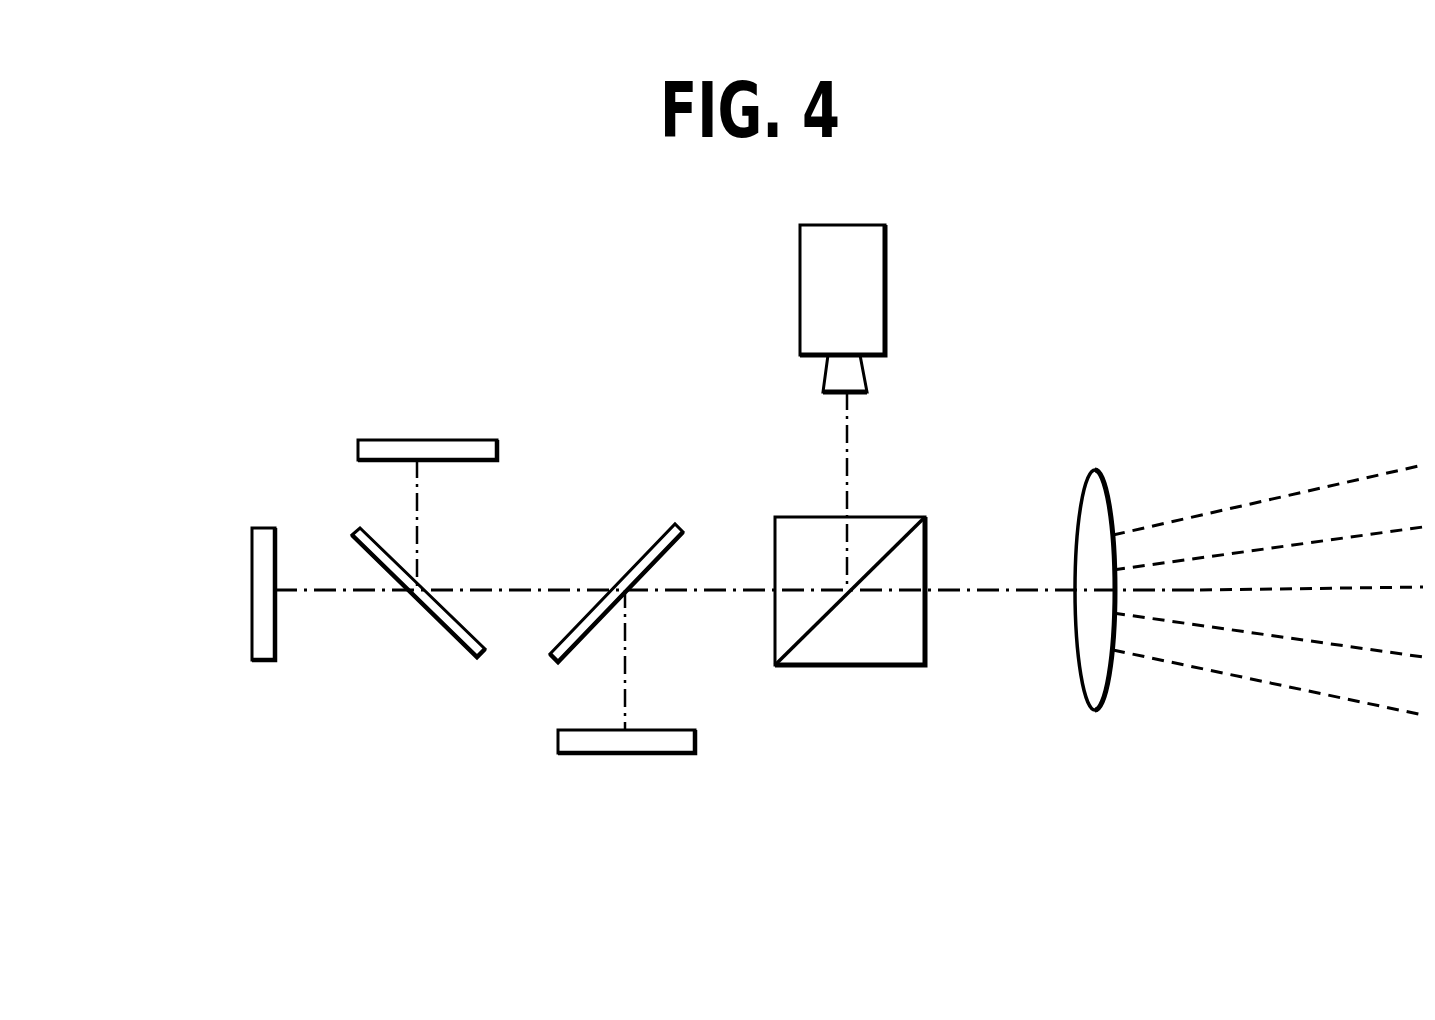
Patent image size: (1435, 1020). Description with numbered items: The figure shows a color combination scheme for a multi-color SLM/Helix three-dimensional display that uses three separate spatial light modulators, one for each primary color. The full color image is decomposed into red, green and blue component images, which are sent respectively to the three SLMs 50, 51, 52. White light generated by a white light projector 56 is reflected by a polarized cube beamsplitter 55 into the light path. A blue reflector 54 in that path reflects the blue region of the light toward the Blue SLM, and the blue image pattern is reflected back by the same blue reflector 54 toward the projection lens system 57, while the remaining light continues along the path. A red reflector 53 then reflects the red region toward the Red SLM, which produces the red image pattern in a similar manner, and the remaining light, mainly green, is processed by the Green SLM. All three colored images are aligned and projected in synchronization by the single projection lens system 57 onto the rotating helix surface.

The SLM 50 is at (420, 440).
The SLM 51 is at (252, 590).
The SLM 52 is at (627, 753).
The Red Reflector dichroic filter 53 is at (440, 627).
The Blue reflector dichroic filter 54 is at (617, 577).
The polarized cube beamsplitter 55 is at (880, 665).
The white light projector 56 is at (885, 283).
The projection lens system 57 is at (1108, 670).